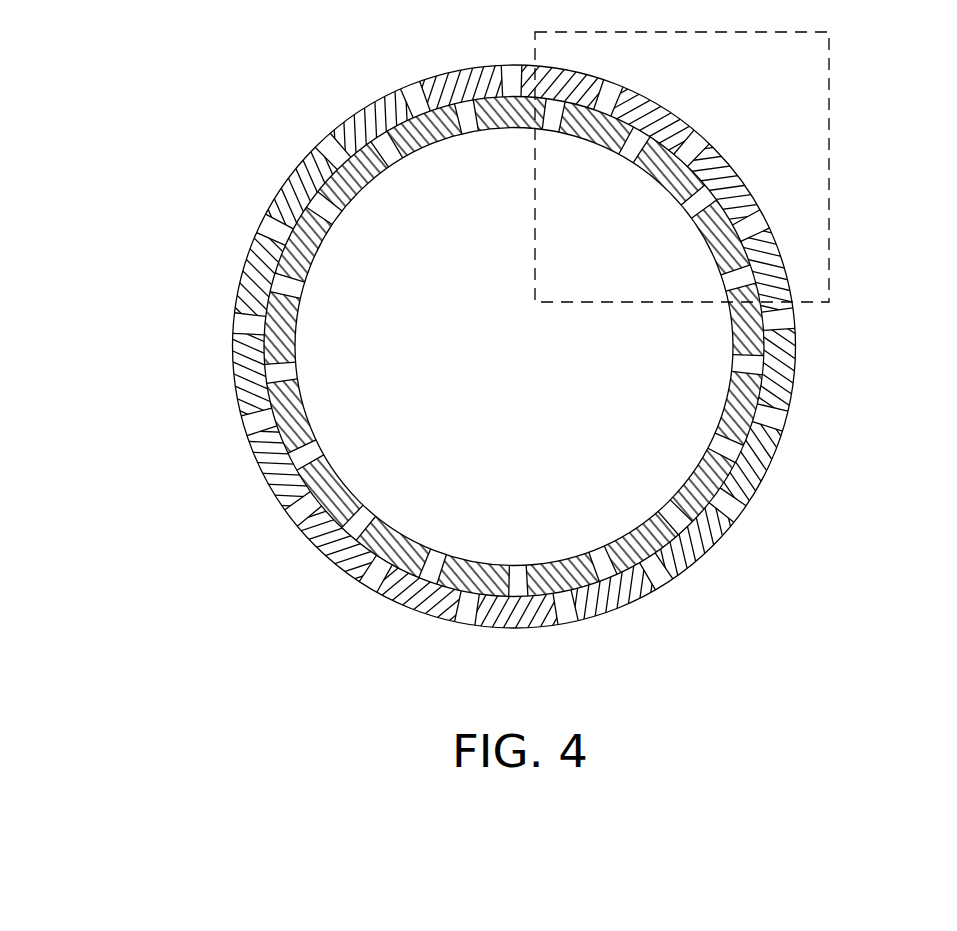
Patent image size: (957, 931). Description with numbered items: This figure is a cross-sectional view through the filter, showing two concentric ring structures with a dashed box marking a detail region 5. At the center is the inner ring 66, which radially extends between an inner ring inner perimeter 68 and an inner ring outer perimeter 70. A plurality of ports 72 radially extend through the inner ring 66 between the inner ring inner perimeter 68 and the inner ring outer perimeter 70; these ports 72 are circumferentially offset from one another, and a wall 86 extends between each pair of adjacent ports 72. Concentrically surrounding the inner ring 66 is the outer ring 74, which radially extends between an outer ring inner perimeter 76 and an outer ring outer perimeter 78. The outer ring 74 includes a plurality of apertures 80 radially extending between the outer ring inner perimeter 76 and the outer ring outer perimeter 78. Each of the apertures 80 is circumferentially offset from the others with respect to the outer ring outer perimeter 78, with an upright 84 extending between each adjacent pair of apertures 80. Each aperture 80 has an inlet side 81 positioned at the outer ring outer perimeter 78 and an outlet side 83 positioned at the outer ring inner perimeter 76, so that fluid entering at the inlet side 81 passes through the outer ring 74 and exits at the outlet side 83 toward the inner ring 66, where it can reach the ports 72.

The detail region 5 is at (836, 87).
The inner ring 66 is at (765, 385).
The inner ring inner perimeter 68 is at (397, 105).
The inner ring outer perimeter 70 is at (285, 200).
The ports 72 is at (327, 207).
The outer ring 74 is at (620, 593).
The outer ring inner perimeter 76 is at (280, 428).
The outer ring outer perimeter 78 is at (237, 282).
The apertures 80 is at (700, 140).
The inlet side 81 is at (727, 505).
The outlet side 83 is at (742, 460).
The upright 84 is at (273, 477).
The wall 86 is at (292, 517).